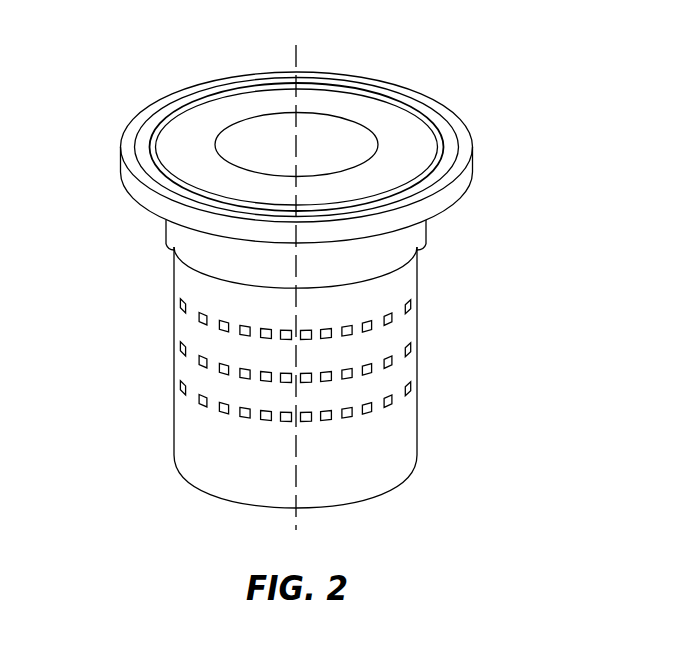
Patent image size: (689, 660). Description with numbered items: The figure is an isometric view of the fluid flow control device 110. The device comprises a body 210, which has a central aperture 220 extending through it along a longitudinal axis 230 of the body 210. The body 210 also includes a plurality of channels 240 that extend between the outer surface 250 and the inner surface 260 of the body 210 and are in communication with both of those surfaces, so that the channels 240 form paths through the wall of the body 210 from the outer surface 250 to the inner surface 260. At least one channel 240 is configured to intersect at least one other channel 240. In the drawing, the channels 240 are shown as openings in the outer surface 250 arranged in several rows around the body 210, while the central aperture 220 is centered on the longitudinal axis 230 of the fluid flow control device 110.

The fluid flow control device 110 is at (417, 271).
The body 210 is at (174, 282).
The central aperture 220 is at (324, 139).
The longitudinal axis 230 is at (295, 531).
The channels 240 is at (396, 322).
The outer surface 250 is at (197, 452).
The inner surface 260 is at (242, 157).